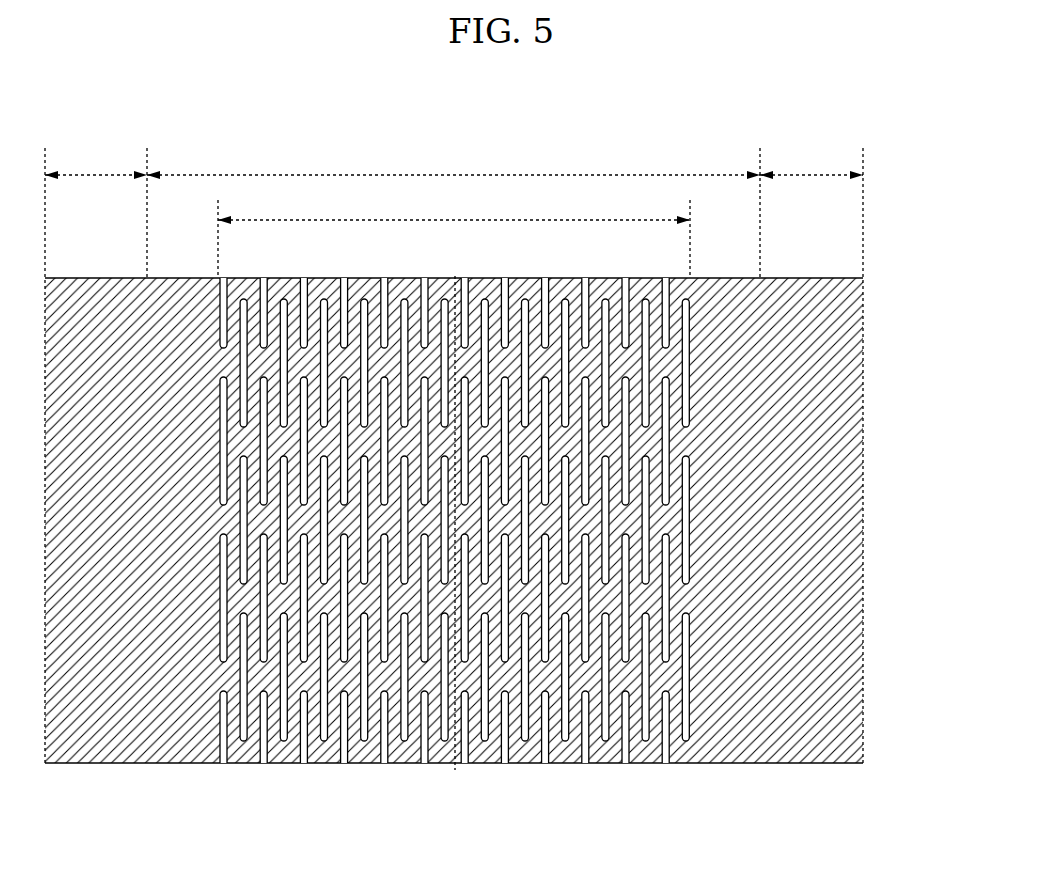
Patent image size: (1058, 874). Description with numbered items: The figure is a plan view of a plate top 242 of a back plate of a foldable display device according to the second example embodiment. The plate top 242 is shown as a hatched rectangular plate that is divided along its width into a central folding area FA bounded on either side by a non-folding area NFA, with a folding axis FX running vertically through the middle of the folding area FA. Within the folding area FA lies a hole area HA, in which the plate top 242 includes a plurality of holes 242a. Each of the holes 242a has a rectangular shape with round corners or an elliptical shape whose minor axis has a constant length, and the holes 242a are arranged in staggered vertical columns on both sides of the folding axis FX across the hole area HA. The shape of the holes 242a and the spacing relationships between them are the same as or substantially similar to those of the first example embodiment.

The plate top 242 is at (863, 598).
The holes 242a is at (210, 415).
The folding axis FX is at (456, 748).
The folding area FA is at (453, 161).
The non-folding area NFA is at (454, 210).
The hole area HA is at (454, 238).